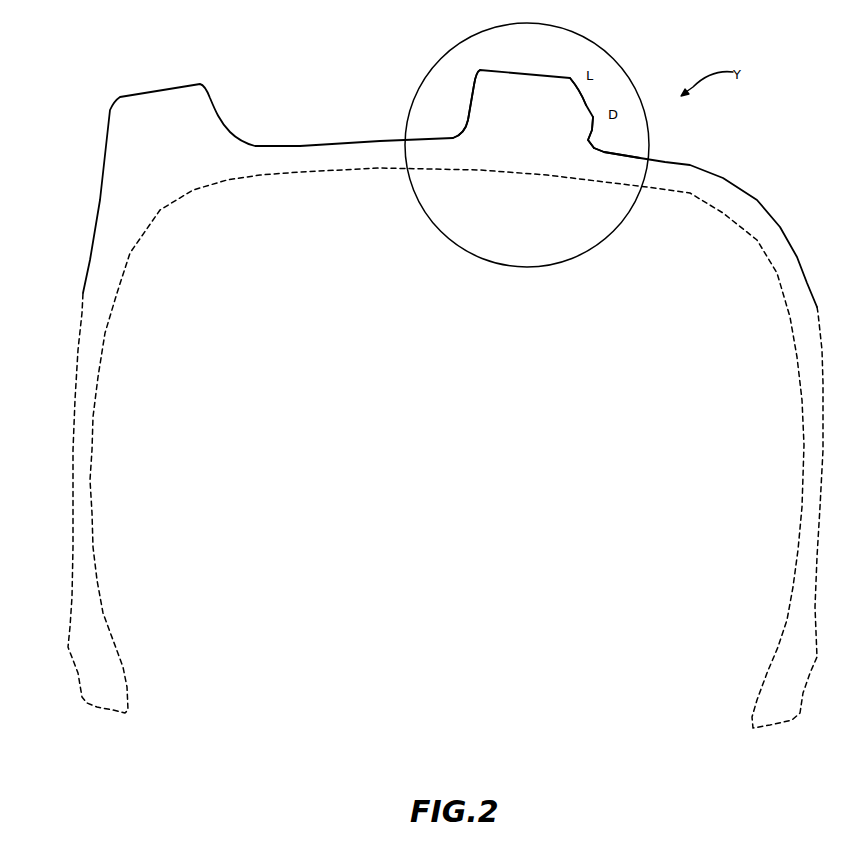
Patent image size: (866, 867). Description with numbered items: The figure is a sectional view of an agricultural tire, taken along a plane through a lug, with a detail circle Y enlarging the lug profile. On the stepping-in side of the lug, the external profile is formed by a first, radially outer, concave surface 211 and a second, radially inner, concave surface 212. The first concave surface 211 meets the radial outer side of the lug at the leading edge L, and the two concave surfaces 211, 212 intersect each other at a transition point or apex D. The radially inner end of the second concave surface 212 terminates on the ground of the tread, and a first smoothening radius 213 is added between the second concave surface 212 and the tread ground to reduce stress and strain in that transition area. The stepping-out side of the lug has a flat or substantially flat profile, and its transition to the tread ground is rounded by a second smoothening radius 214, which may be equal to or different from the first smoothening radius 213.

The first concave surface 211 is at (577, 96).
The second concave surface 212 is at (597, 143).
The first smoothening radius 213 is at (610, 150).
The second smoothening radius 214 is at (462, 131).